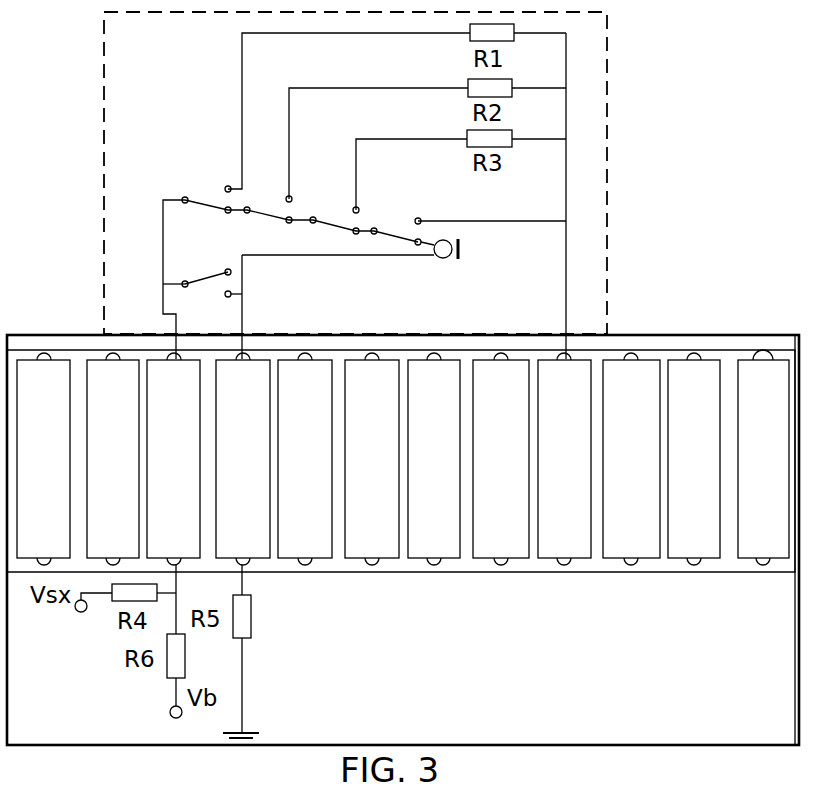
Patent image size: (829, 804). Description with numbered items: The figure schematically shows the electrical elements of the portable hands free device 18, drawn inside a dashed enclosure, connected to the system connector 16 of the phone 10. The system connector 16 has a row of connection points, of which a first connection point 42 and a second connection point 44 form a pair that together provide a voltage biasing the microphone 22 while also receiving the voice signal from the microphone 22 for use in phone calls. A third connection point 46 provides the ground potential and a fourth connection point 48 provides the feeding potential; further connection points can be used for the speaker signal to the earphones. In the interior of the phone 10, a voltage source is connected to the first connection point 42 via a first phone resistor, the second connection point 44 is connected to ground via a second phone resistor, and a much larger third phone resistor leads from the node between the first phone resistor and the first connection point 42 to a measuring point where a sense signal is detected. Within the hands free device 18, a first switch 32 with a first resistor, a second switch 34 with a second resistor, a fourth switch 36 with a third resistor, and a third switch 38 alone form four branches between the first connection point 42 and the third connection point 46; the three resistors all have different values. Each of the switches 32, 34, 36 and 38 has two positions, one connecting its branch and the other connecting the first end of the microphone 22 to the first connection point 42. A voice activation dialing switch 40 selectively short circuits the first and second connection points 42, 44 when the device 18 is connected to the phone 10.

The phone 10 is at (661, 333).
The system connector 16 is at (455, 573).
The hands free device 18 is at (607, 213).
The microphone 22 is at (371, 250).
The first switch 32 is at (337, 112).
The second switch 34 is at (360, 145).
The fourth switch 36 is at (394, 176).
The third switch 38 is at (474, 206).
The VAD switch 40 is at (202, 307).
The first connection point 42 is at (173, 459).
The second connection point 44 is at (243, 459).
The third connection point 46 is at (564, 459).
The fourth connection point 48 is at (763, 457).